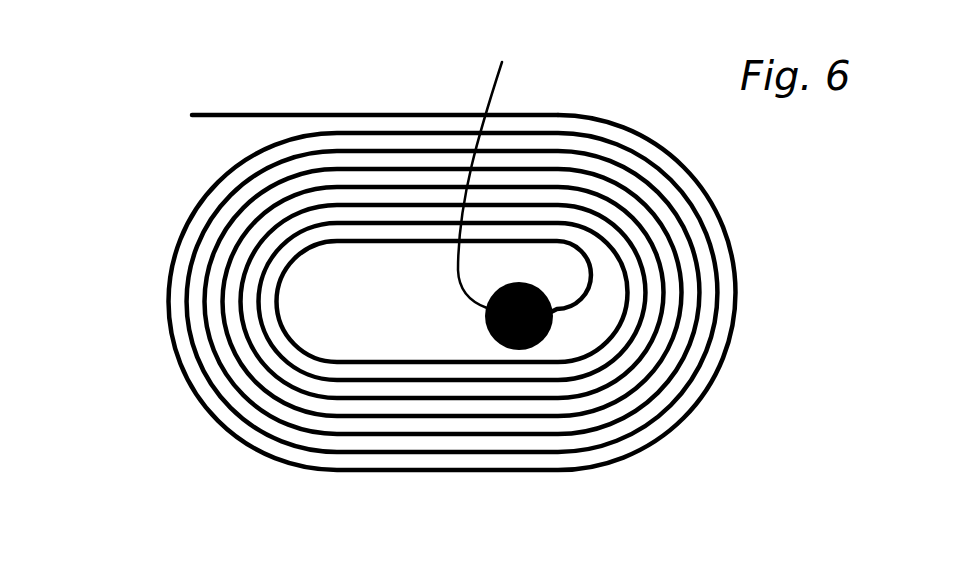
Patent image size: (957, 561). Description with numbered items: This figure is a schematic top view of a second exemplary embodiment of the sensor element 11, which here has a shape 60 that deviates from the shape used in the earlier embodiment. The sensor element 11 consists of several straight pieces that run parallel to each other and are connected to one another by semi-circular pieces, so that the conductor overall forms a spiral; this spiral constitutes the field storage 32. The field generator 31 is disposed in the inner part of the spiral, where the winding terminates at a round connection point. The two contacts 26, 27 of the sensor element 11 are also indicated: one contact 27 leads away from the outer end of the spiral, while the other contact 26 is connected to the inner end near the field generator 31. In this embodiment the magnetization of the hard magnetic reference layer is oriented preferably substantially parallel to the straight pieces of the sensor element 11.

The sensor element 11 is at (227, 63).
The contact 26 is at (496, 160).
The contact 27 is at (243, 115).
The field generator 31 is at (543, 340).
The field storage 32 is at (237, 357).
The shape 60 is at (743, 445).